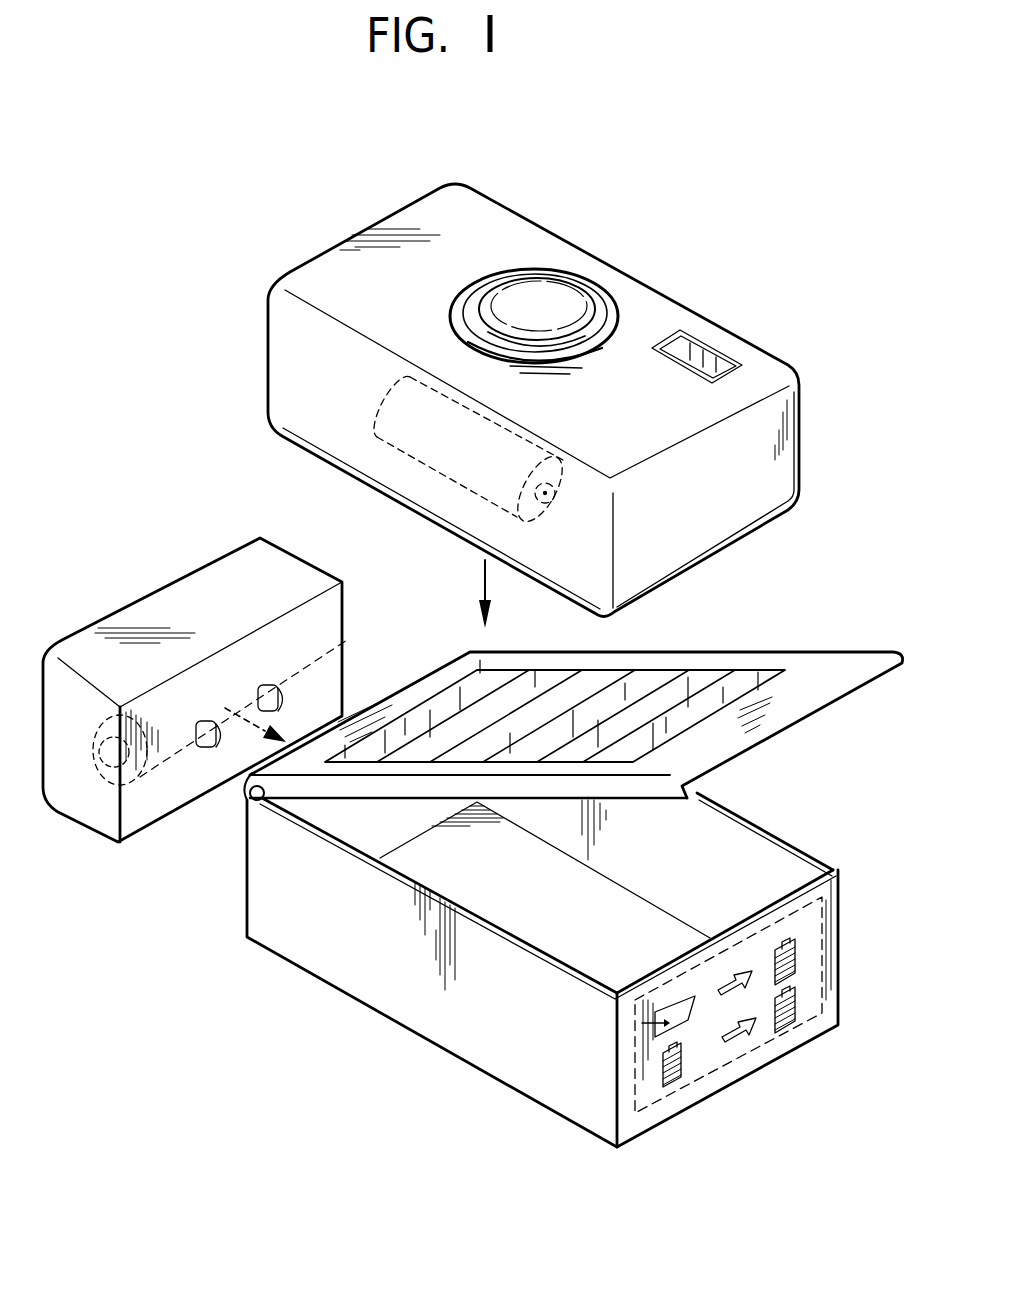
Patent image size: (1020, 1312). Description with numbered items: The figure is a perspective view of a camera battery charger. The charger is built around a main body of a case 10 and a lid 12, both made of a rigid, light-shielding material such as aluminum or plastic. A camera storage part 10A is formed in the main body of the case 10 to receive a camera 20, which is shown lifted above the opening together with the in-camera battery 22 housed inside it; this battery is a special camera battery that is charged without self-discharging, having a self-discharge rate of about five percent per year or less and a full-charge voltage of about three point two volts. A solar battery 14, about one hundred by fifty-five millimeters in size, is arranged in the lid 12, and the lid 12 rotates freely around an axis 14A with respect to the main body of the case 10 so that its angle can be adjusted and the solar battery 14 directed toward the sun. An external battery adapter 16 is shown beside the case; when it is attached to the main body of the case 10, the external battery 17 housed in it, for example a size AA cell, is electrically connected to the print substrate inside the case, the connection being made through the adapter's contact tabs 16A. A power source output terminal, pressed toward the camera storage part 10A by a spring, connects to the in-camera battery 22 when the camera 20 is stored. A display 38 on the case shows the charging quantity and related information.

The main body of the case 10 is at (408, 1030).
The camera storage part 10A is at (727, 885).
The lid 12 is at (824, 708).
The solar battery 14 is at (648, 690).
The axis 14A is at (253, 798).
The external battery adapter 16 is at (157, 605).
The contact tabs 16A is at (214, 720).
The external battery 17 is at (147, 780).
The camera 20 is at (536, 228).
The in-camera battery 22 is at (378, 402).
The display 38 is at (820, 1015).